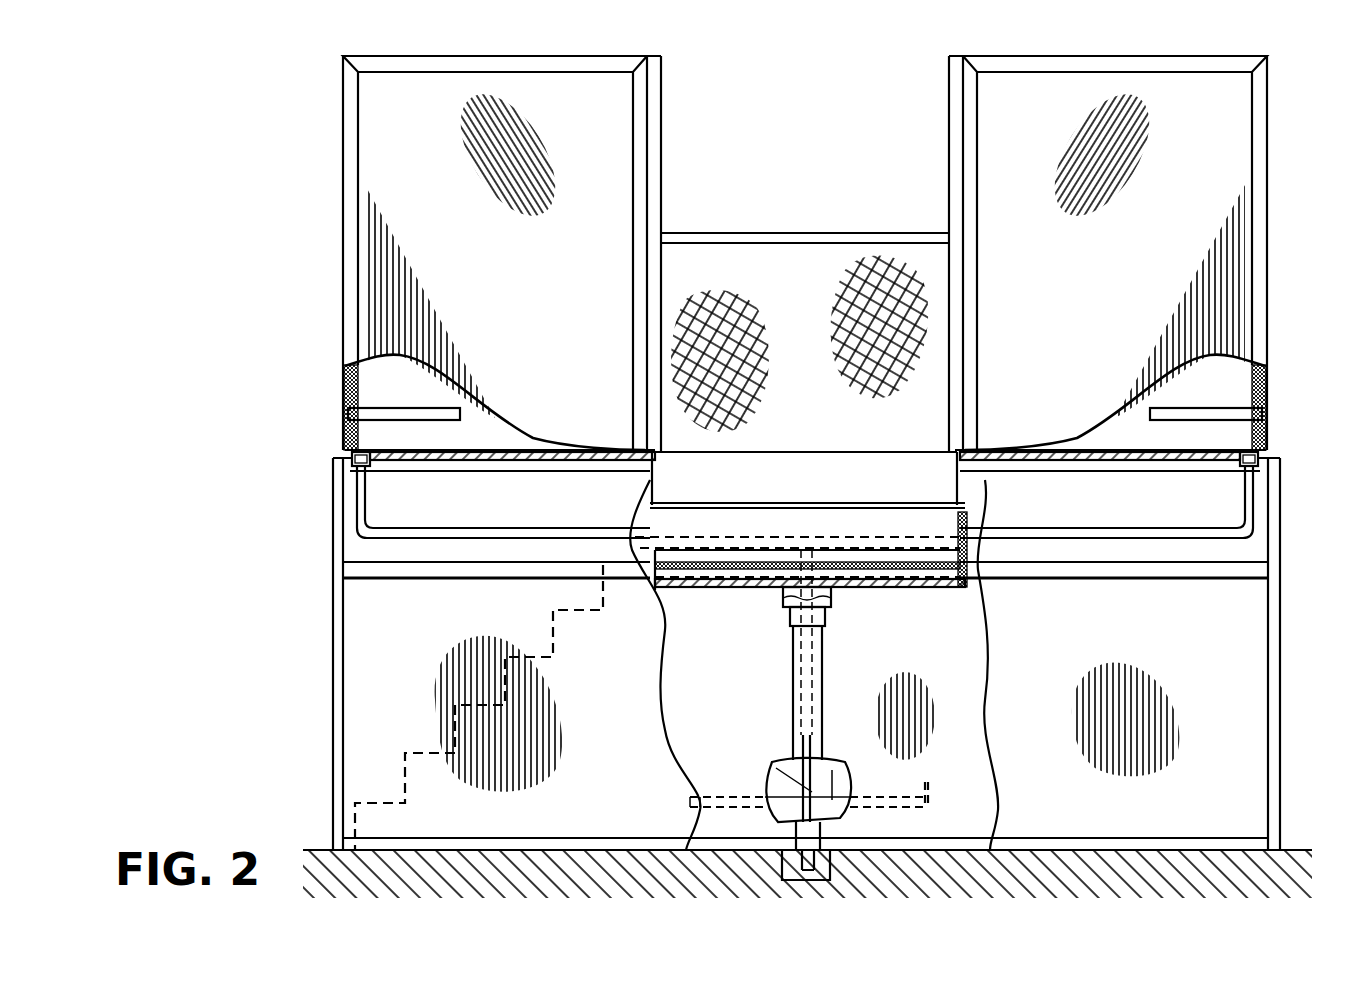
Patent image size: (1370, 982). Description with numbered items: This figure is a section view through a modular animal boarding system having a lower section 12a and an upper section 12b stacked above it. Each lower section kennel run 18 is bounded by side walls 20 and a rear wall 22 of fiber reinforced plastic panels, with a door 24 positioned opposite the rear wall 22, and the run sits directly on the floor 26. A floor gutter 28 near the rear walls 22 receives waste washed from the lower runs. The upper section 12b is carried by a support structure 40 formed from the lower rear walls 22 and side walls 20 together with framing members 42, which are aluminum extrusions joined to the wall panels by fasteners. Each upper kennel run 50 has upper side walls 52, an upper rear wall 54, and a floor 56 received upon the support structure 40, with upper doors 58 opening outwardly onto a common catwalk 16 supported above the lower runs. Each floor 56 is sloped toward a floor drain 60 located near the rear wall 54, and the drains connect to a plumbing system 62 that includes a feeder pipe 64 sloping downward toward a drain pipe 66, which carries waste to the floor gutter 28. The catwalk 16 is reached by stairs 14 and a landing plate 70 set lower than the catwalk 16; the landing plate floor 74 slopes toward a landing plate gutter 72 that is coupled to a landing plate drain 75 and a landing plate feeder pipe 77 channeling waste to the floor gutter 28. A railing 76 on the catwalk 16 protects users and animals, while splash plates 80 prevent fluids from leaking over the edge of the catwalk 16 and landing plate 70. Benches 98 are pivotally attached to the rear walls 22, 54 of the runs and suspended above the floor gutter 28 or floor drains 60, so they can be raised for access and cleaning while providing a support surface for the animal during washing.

The lower section 12a is at (322, 614).
The upper section 12b is at (305, 142).
The stairs 14 is at (553, 614).
The catwalk 16 is at (791, 503).
The lower section kennel run 18 is at (268, 692).
The side walls 20 is at (721, 693).
The rear wall 22 is at (777, 763).
The door 24 is at (333, 735).
The floor 26 is at (1048, 850).
The floor gutter 28 is at (790, 845).
The support structure 40 is at (1210, 648).
The framing members 42 is at (358, 130).
The upper kennel run 50 is at (343, 199).
The upper side walls 52 is at (526, 333).
The upper rear wall 54 is at (345, 393).
The floor 56 is at (566, 450).
The upper doors 58 is at (663, 200).
The floor drain 60 is at (372, 470).
The plumbing system 62 is at (450, 496).
The feeder pipe 64 is at (438, 543).
The drain pipe 66 is at (796, 657).
The landing plate 70 is at (652, 566).
The landing plate gutter 72 is at (896, 585).
The floor of the landing plate 74 is at (808, 562).
The landing plate drain 75 is at (832, 604).
The railing 76 is at (802, 233).
The landing plate feeder pipe 77 is at (796, 700).
The splash plates 80 is at (963, 518).
The benches 98 is at (442, 410).